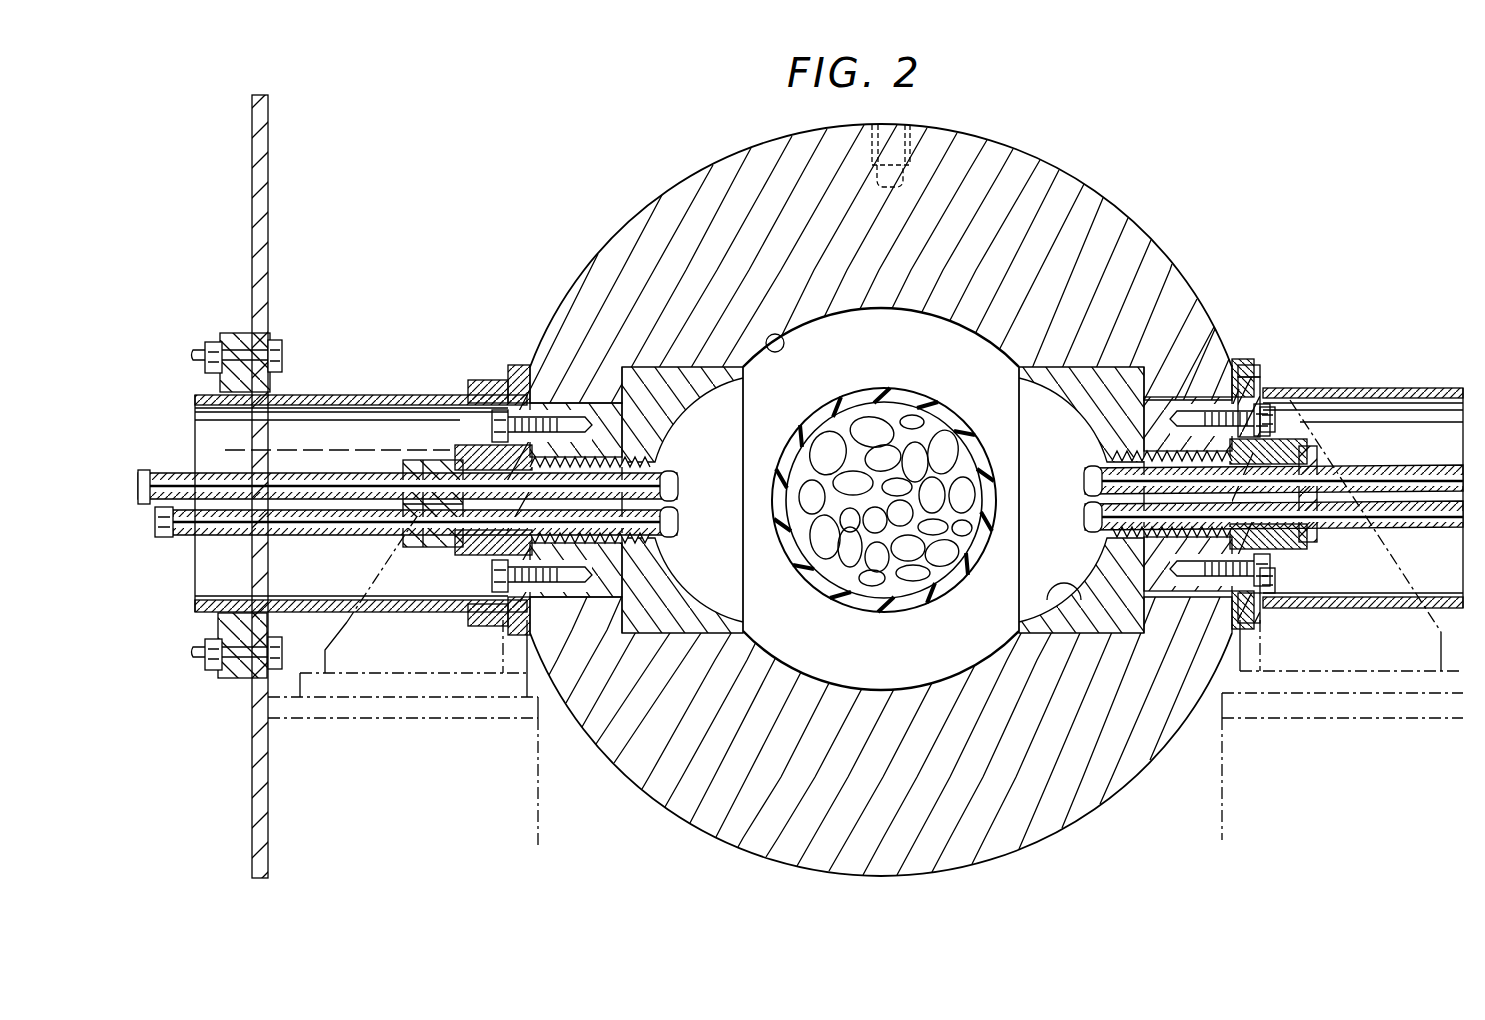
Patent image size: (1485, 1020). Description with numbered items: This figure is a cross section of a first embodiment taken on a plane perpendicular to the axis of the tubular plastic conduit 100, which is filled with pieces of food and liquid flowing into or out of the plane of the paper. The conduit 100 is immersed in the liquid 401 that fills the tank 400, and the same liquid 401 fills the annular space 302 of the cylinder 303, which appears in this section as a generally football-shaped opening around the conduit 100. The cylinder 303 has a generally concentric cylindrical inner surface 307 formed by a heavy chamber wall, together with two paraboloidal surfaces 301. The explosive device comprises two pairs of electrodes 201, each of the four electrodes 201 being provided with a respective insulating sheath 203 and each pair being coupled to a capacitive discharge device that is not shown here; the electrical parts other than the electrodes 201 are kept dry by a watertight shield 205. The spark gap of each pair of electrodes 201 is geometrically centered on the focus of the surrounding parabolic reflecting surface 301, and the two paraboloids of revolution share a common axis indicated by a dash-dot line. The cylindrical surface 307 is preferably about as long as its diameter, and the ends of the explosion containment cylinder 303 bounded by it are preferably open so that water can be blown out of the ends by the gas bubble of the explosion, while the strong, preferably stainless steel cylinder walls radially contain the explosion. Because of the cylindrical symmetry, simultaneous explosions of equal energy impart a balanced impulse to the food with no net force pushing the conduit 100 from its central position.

The tubular plastic conduit 100 is at (936, 405).
The electrodes 201 is at (1155, 440).
The insulating sheath 203 is at (1232, 366).
The watertight shield 205 is at (1375, 388).
The paraboloidal surfaces 301 is at (673, 398).
The annular space 302 is at (817, 652).
The cylinder 303 is at (1012, 822).
The cylindrical inner surface 307 is at (773, 340).
The tank 400 is at (270, 262).
The liquid 401 is at (908, 367).